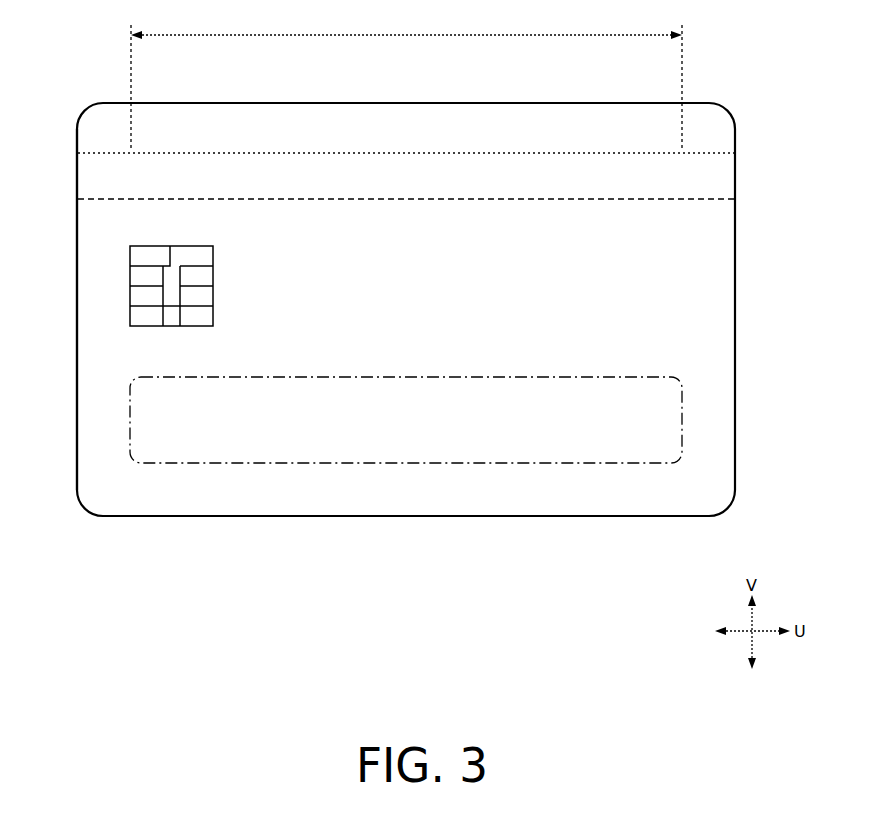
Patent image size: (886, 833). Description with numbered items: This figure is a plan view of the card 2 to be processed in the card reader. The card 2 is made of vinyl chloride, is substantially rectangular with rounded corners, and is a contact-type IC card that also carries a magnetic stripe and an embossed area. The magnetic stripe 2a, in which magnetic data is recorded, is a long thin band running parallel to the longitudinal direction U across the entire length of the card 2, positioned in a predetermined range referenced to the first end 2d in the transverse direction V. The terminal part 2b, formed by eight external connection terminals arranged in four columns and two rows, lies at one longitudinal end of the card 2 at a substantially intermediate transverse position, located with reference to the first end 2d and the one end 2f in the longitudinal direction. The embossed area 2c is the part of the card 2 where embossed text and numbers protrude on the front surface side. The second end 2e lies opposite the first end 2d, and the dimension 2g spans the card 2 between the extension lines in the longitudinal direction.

The card 2 is at (743, 80).
The magnetic stripe 2a is at (254, 153).
The terminal part 2b is at (216, 278).
The embossed area 2c is at (564, 377).
The first end 2d is at (423, 103).
The second end 2e is at (386, 517).
The one end 2f is at (77, 354).
The card width 2g is at (406, 80).